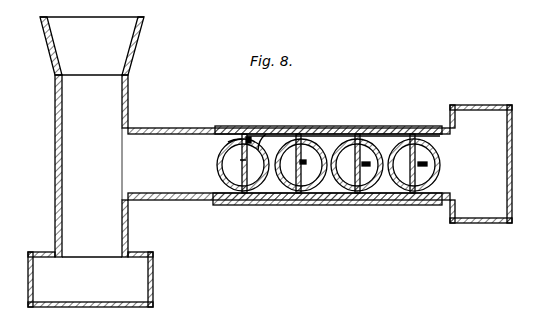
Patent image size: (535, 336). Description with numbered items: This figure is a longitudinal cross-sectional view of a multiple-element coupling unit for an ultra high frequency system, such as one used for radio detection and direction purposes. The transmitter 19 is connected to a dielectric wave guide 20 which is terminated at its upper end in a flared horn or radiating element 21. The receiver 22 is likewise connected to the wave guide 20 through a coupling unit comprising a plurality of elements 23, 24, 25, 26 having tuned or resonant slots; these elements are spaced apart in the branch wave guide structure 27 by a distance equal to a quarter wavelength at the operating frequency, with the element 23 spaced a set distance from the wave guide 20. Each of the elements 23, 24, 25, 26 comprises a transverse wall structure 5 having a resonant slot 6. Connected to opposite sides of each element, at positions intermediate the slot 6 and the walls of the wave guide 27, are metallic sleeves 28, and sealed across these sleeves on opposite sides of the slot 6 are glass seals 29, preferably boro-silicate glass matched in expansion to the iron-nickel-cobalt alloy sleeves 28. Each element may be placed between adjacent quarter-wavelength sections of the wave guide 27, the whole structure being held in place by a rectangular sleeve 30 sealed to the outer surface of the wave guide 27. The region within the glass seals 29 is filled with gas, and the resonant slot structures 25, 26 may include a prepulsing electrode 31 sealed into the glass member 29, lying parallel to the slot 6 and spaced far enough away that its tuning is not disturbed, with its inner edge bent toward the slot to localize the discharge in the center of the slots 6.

The transverse wall structure 5 is at (232, 139).
The resonant slot 6 is at (243, 160).
The transmitter 19 is at (140, 286).
The dielectric wave guide 20 is at (67, 231).
The flared horn or radiating element 21 is at (125, 47).
The receiver 22 is at (485, 212).
The coupling element 23 is at (237, 190).
The coupling element 24 is at (297, 190).
The coupling element 25 is at (353, 190).
The coupling element 26 is at (410, 187).
The branch wave guide structure 27 is at (167, 200).
The metallic sleeve 28 is at (249, 139).
The glass seal 29 is at (268, 150).
The rectangular sleeve 30 is at (335, 126).
The prepulsing electrode 31 is at (423, 163).